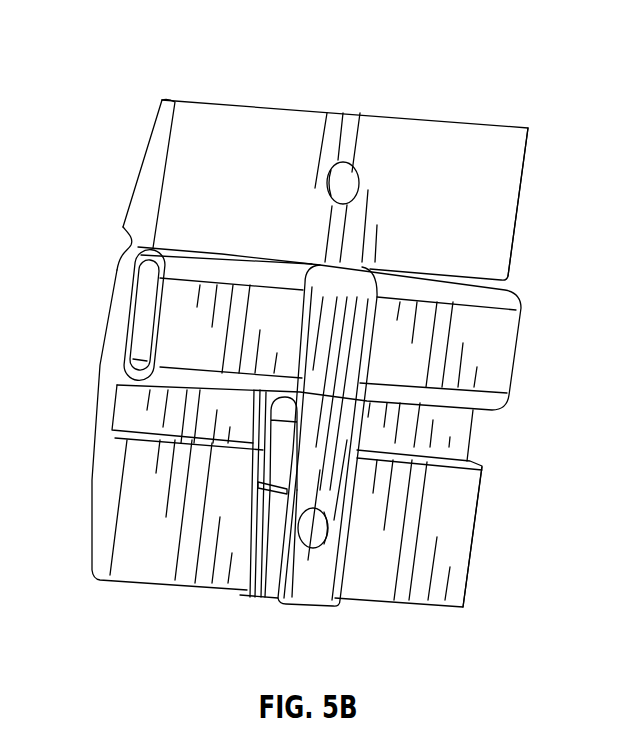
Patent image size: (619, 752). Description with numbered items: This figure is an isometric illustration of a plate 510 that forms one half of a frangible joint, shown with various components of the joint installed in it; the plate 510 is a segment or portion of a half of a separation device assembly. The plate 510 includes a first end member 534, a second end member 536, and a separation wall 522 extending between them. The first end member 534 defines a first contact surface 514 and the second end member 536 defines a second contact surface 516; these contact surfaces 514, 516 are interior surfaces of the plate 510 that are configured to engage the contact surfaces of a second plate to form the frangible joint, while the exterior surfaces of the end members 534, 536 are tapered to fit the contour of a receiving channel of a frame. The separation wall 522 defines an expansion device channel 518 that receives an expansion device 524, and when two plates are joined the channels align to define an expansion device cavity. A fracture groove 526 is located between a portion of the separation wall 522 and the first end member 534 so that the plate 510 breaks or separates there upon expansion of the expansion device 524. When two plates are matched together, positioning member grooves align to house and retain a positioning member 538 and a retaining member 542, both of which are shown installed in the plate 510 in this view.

The plate 510 is at (204, 68).
The first contact surface 514 is at (473, 212).
The second contact surface 516 is at (123, 553).
The expansion device channel 518 is at (441, 422).
The separation wall 522 is at (118, 302).
The expansion device 524 is at (145, 320).
The fracture groove 526 is at (123, 242).
The first end member 534 is at (497, 184).
The second end member 536 is at (448, 507).
The positioning member 538 is at (263, 583).
The retaining member 542 is at (295, 582).